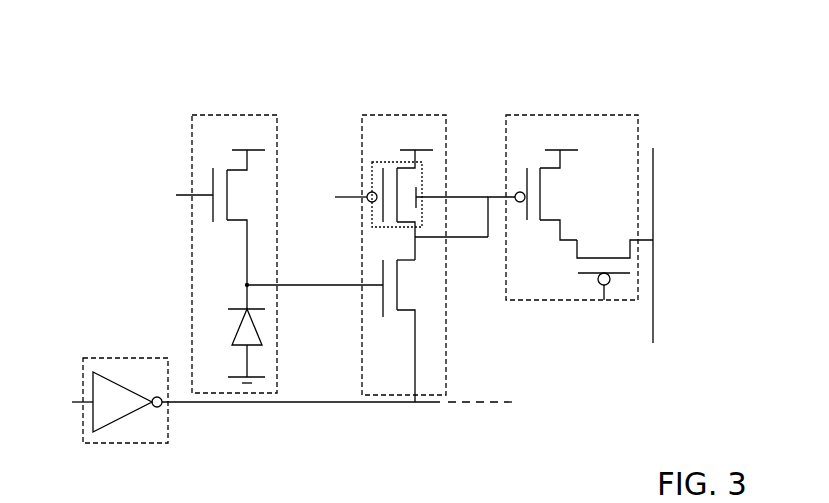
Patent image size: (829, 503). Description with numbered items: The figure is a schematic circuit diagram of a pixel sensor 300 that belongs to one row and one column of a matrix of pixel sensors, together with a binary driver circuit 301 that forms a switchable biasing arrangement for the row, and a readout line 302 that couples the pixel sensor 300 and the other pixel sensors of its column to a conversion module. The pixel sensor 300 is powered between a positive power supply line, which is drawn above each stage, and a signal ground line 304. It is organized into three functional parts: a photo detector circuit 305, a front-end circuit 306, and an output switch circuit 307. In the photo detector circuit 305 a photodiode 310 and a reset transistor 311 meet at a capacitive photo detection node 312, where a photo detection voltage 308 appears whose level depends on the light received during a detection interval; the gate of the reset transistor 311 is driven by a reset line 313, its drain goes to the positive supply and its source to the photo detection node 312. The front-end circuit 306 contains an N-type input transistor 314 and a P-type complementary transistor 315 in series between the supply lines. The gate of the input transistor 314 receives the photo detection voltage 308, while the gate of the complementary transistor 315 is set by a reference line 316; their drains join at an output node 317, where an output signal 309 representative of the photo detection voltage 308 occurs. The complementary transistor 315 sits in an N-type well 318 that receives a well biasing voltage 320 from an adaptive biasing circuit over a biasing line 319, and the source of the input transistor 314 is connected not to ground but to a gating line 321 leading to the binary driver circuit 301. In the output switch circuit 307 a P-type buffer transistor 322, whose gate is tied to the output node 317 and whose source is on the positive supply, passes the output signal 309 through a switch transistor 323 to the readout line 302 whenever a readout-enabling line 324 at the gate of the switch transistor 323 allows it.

The pixel sensor 300 is at (70, 62).
The binary driver circuit 301 is at (103, 358).
The readout line 302 is at (653, 343).
The signal ground line 304 is at (247, 380).
The photo detector circuit 305 is at (233, 115).
The front-end circuit 306 is at (403, 115).
The output switch circuit 307 is at (572, 115).
The photo detection voltage 308 is at (315, 273).
The output signal 309 is at (466, 226).
The photodiode 310 is at (243, 322).
The reset transistor 311 is at (213, 180).
The photo detection node 312 is at (247, 285).
The reset line 313 is at (176, 195).
The input transistor 314 is at (397, 310).
The complementary transistor 315 is at (397, 222).
The reference line 316 is at (335, 197).
The output node 317 is at (417, 238).
The well 318 is at (371, 162).
The biasing line 319 is at (461, 198).
The well biasing voltage 320 is at (452, 192).
The gating line 321 is at (306, 402).
The buffer transistor 322 is at (545, 210).
The switch transistor 323 is at (580, 255).
The readout-enabling line 324 is at (604, 298).